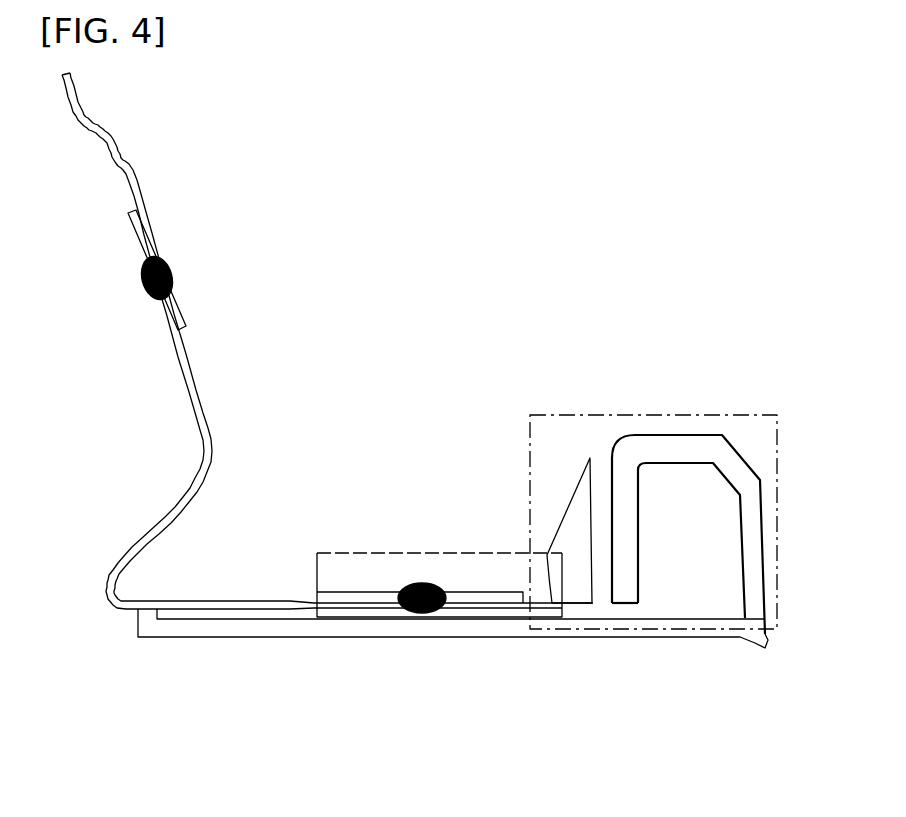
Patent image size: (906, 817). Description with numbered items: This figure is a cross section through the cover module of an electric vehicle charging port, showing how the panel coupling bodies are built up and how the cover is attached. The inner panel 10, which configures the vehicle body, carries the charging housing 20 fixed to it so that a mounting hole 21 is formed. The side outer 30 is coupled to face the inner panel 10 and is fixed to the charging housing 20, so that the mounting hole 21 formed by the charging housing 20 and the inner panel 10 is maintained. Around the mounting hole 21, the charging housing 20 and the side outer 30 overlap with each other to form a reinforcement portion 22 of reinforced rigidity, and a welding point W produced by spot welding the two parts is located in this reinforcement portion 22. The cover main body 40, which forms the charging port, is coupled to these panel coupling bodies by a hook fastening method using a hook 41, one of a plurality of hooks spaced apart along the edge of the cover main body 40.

The inner panel 10 is at (97, 129).
The charging housing 20 is at (207, 405).
The mounting hole 21 is at (549, 598).
The reinforcement portion 22 is at (400, 553).
The welding point W is at (141, 278).
The side outer 30 is at (503, 638).
The cover main body 40 is at (340, 639).
The hook 41 is at (684, 415).